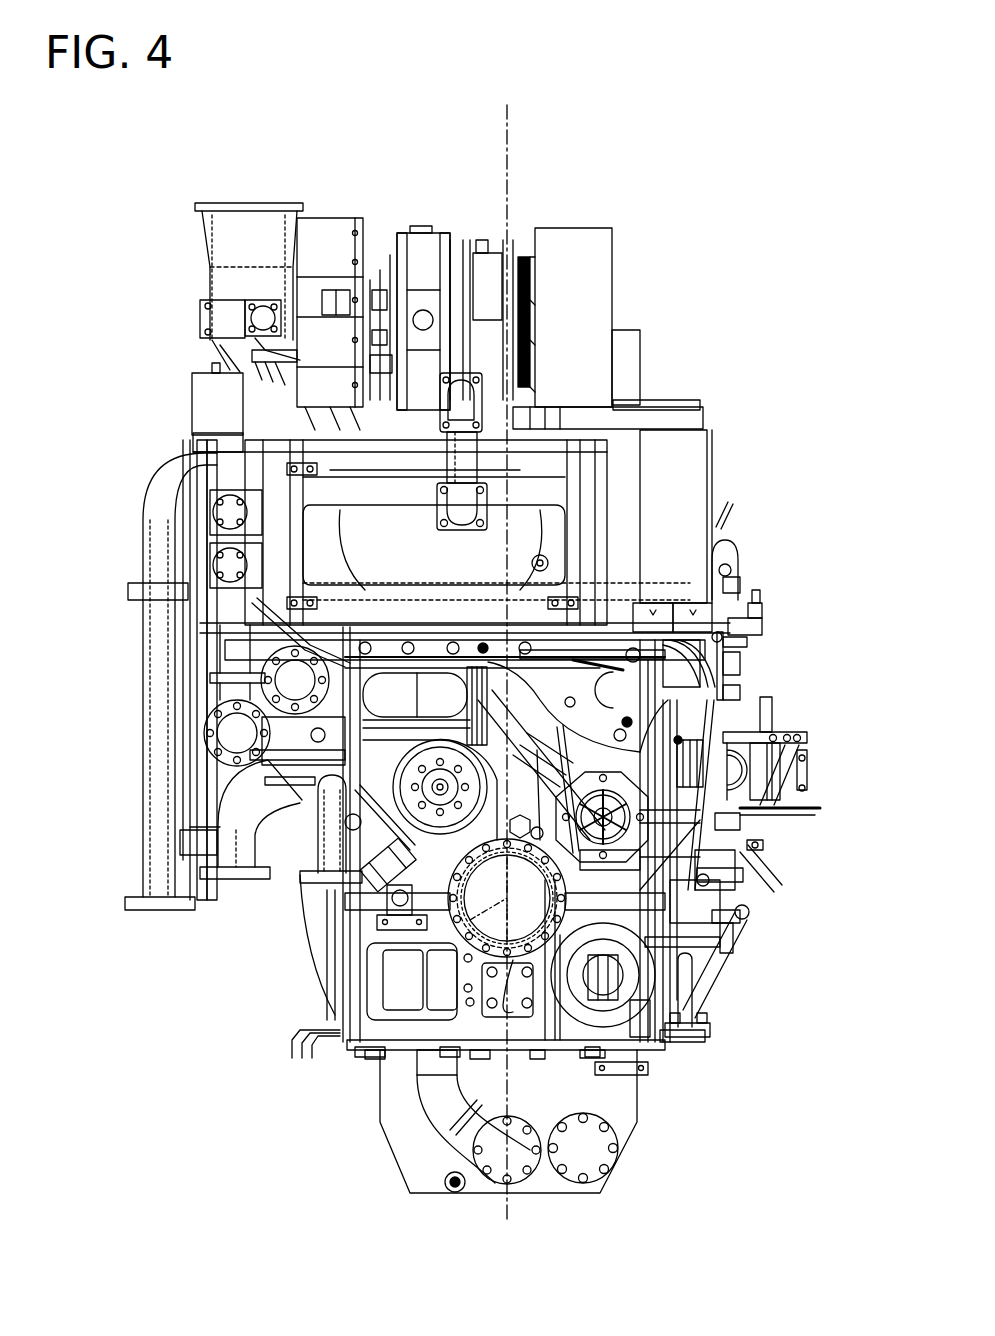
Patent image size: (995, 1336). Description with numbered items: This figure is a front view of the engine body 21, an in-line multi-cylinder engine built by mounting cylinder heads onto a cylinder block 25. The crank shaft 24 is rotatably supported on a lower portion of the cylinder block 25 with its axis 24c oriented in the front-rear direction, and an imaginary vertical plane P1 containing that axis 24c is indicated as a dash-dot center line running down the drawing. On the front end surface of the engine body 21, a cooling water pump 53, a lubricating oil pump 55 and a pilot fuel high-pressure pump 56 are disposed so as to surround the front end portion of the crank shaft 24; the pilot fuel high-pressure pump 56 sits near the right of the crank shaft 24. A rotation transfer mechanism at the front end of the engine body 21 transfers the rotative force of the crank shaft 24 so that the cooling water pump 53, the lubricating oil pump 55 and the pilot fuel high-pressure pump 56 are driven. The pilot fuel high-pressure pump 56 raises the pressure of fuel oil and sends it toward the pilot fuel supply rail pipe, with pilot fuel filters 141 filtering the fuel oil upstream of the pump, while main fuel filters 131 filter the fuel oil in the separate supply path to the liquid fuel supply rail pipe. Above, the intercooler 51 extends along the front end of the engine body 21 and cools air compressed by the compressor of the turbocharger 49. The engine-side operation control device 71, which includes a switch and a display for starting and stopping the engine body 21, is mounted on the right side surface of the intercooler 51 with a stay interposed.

The engine body 21 is at (423, 192).
The imaginary vertical plane P1 is at (509, 130).
The turbocharger 49 is at (571, 240).
The engine-side operation control device 71 is at (712, 470).
The intercooler 51 is at (540, 528).
The pilot fuel filters 141 is at (768, 728).
The cooling water pump 53 is at (707, 866).
The main fuel filters 131 is at (742, 923).
The pilot fuel high-pressure pump 56 is at (680, 977).
The crank shaft 24 is at (298, 908).
The axis 24c is at (318, 947).
The lubricating oil pump 55 is at (317, 980).
The cylinder block 25 is at (330, 1052).